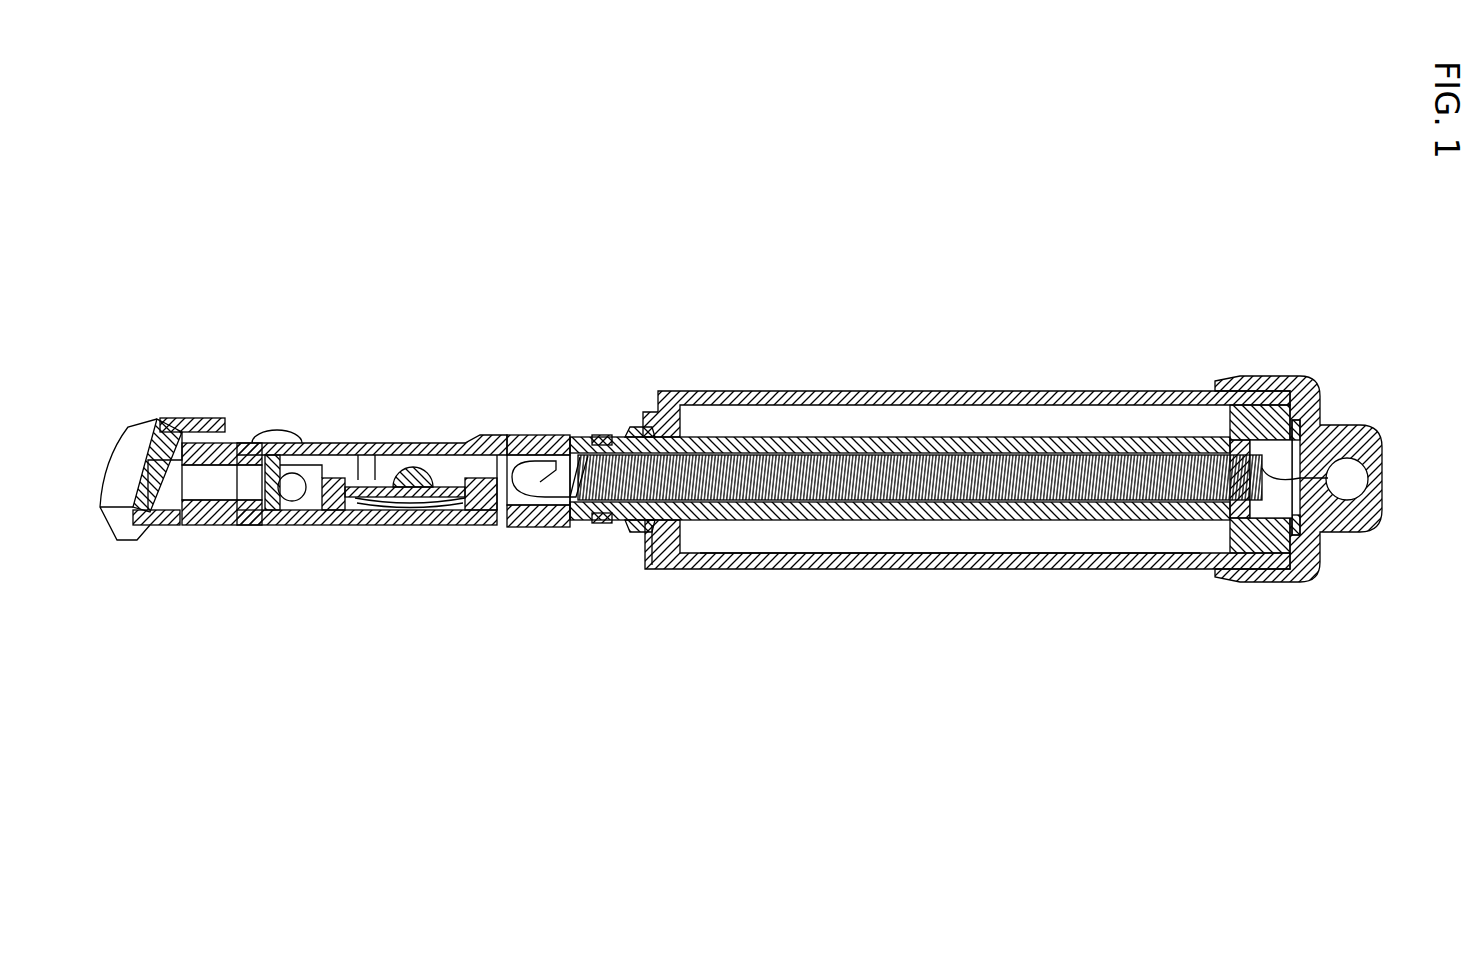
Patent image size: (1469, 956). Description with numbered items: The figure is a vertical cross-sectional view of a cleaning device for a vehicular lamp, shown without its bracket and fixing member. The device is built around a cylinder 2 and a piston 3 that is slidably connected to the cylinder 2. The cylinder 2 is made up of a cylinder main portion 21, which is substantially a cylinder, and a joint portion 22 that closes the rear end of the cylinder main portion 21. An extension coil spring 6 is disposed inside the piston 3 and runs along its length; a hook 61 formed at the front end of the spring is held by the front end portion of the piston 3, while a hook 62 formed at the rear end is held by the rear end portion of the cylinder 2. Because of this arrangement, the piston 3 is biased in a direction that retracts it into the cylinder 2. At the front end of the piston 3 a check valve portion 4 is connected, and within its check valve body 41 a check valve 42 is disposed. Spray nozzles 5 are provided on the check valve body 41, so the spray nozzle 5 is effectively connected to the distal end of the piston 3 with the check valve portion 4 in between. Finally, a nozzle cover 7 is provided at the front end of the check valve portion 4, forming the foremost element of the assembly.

The cylinder 2 is at (908, 391).
The cylinder main portion 21 is at (1003, 569).
The joint portion 22 is at (1278, 376).
The piston 3 is at (787, 520).
The check valve portion 4 is at (380, 443).
The check valve body 41 is at (480, 440).
The check valve 42 is at (410, 520).
The spray nozzle 5 is at (276, 432).
The extension coil spring 6 is at (787, 455).
The hook 61 is at (533, 460).
The hook 62 is at (1318, 478).
The nozzle cover 7 is at (169, 418).